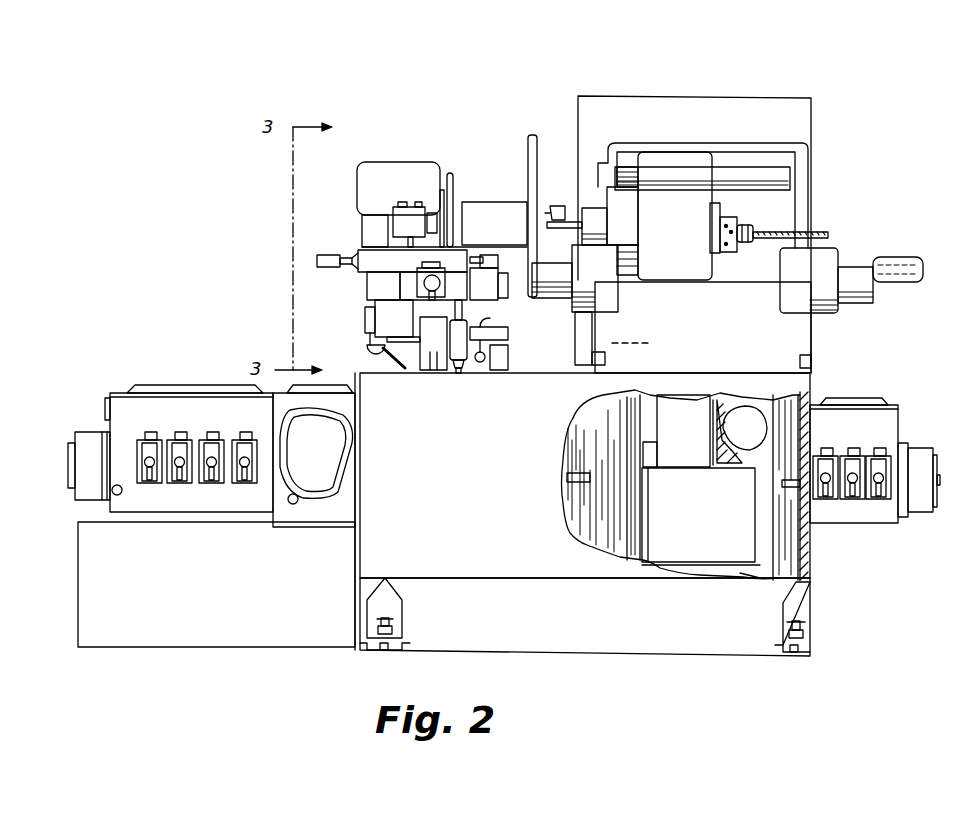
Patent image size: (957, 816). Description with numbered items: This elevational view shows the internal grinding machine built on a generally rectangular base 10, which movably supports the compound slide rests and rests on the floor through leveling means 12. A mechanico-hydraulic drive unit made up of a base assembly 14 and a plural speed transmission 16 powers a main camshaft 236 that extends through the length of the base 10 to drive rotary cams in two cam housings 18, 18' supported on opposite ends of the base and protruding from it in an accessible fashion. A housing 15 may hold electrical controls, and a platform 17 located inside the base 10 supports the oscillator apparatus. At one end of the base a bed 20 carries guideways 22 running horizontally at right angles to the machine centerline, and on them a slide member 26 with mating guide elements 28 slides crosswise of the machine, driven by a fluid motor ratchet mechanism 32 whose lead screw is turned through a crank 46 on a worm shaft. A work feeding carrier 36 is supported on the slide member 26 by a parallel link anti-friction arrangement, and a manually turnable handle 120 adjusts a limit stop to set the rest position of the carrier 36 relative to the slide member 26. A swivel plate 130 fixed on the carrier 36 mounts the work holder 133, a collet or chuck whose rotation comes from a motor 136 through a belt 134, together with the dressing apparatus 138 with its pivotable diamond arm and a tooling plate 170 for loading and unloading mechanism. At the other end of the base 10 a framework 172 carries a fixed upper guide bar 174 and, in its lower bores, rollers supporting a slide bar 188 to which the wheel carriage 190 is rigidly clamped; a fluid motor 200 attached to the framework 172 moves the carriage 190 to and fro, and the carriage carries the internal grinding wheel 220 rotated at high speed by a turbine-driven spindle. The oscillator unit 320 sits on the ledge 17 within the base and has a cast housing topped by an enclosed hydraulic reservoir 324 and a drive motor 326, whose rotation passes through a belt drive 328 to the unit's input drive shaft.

The base 10 is at (475, 548).
The leveling means 12 is at (802, 638).
The base assembly 14 is at (96, 579).
The housing 15 is at (803, 113).
The plural speed transmission 16 is at (344, 499).
The platform 17 is at (746, 572).
The cam housing 18 is at (170, 426).
The cam housing 18' is at (882, 460).
The bed 20 is at (372, 348).
The guideways 22 is at (372, 333).
The slide member 26 is at (385, 320).
The mating guide elements 28 is at (404, 364).
The fluid motor ratchet mechanism 32 is at (462, 366).
The work feeding carrier 36 is at (390, 284).
The crank 46 is at (490, 356).
The manually turnable handle 120 is at (317, 261).
The swivel plate 130 is at (378, 248).
The work holder 133 is at (488, 212).
The belt 134 is at (452, 172).
The motor 136 is at (407, 178).
The dressing apparatus 138 is at (554, 200).
The tooling plate 170 is at (533, 134).
The framework 172 is at (803, 192).
The upper guide bar 174 is at (768, 170).
The slide bar 188 is at (727, 277).
The wheel carriage 190 is at (690, 217).
The fluid motor 200 is at (890, 262).
The internal grinding wheel 220 is at (572, 234).
The main camshaft 236 is at (588, 484).
The oscillator unit 320 is at (725, 522).
The reservoir 324 is at (677, 427).
The drive motor 326 is at (748, 422).
The belt drive 328 is at (722, 451).